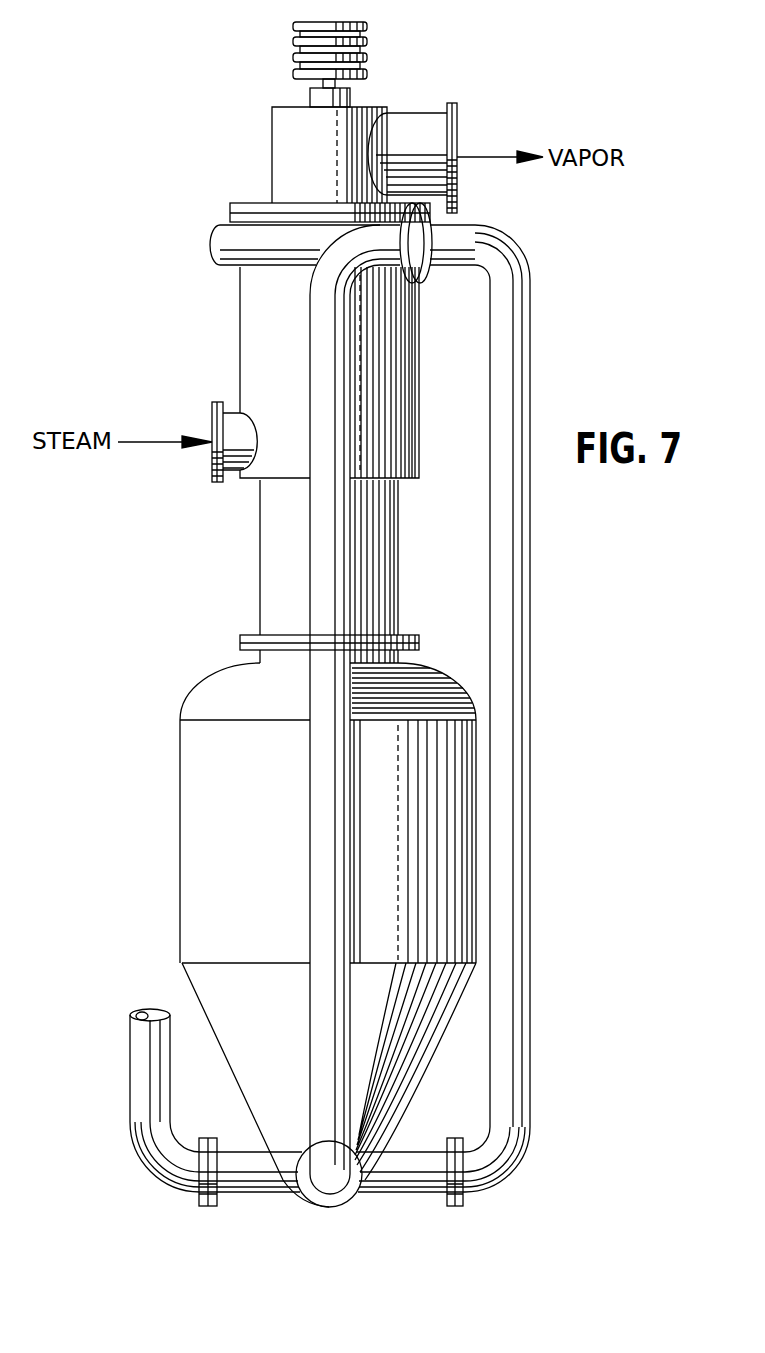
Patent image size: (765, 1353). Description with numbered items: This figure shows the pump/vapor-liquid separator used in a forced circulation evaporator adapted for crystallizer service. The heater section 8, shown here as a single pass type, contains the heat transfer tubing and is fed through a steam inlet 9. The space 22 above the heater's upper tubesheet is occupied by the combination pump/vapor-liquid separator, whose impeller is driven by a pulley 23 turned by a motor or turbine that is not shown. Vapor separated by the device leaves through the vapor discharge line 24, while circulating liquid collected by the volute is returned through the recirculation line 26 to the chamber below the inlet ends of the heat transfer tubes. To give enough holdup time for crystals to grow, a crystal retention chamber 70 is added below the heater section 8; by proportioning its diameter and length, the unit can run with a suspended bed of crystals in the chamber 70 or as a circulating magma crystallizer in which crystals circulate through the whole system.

The heater section 8 is at (268, 555).
The steam inlet 9 is at (212, 424).
The space above upper tubesheet 22 is at (250, 318).
The pulley 23 is at (297, 25).
The vapor discharge line 24 is at (410, 122).
The recirculation line 26 is at (520, 625).
The crystal retention chamber 70 is at (197, 838).